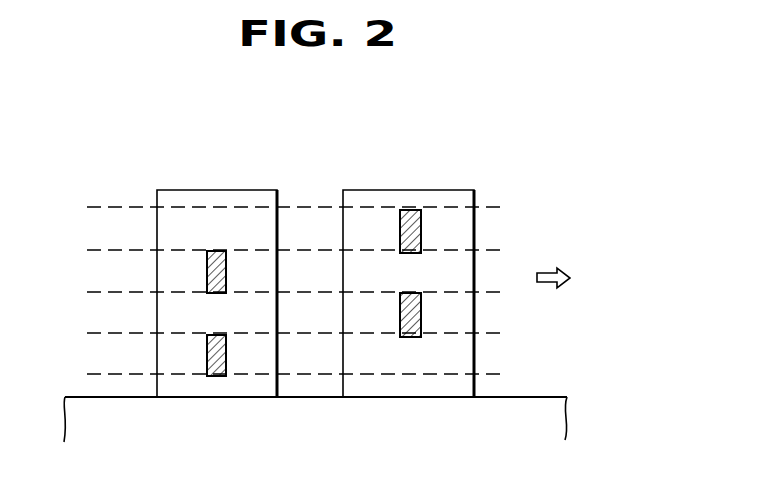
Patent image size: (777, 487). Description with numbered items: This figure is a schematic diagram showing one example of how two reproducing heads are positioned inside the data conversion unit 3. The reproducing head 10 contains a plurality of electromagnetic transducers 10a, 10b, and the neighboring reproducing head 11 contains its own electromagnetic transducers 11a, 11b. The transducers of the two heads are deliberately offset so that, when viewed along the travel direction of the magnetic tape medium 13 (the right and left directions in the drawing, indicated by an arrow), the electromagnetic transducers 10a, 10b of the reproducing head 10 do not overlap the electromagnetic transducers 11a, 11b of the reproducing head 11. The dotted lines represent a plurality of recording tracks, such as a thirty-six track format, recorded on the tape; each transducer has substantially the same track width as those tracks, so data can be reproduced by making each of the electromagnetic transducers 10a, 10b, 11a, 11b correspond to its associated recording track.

The data conversion unit 3 is at (562, 424).
The reproducing head 10 is at (456, 190).
The electromagnetic transducer 10a is at (421, 315).
The electromagnetic transducer 10b is at (421, 228).
The reproducing head 11 is at (253, 190).
The electromagnetic transducer 11a is at (207, 353).
The electromagnetic transducer 11b is at (207, 268).
The magnetic tape medium 13 is at (548, 272).